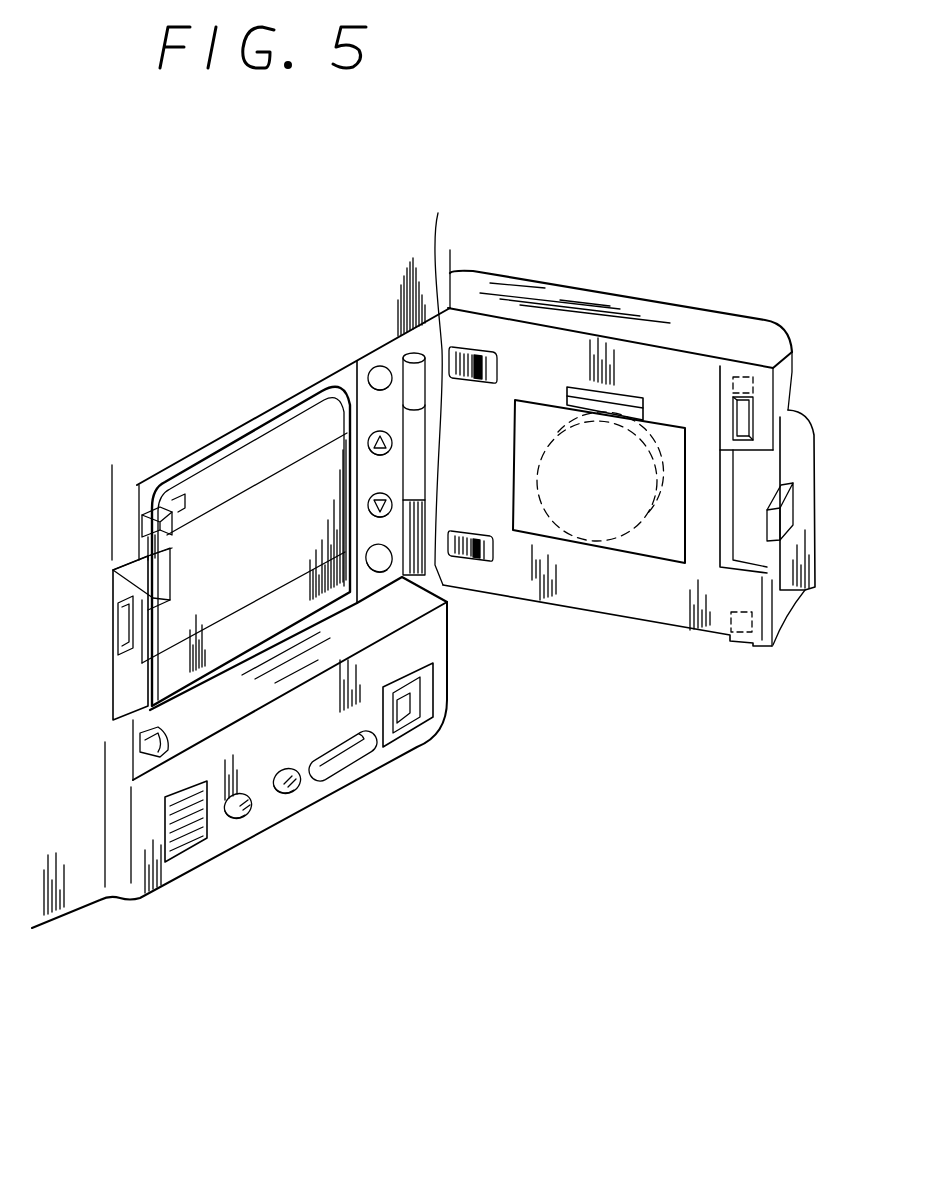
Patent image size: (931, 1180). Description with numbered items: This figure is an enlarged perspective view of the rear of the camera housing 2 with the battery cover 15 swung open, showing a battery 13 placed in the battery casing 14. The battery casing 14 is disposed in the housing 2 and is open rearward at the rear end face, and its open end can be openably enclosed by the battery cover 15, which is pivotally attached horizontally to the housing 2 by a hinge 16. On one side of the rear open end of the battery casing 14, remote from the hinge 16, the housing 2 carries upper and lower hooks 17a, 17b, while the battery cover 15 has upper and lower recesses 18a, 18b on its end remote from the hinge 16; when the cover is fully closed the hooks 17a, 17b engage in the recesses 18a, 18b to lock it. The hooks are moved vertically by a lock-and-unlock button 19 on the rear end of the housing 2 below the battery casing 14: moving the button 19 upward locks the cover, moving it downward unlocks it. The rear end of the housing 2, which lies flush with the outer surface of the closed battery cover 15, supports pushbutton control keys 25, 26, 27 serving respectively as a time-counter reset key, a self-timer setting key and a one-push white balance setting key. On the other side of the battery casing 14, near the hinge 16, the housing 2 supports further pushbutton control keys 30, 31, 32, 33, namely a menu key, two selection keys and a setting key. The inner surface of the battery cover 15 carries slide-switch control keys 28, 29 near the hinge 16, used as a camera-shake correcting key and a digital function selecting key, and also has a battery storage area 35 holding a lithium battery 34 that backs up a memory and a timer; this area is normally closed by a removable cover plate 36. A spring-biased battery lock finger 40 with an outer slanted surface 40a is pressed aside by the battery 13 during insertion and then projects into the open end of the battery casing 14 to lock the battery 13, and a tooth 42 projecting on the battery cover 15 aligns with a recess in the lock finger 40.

The housing 2 is at (66, 920).
The battery 13 is at (247, 520).
The battery casing 14 is at (347, 373).
The battery cover 15 is at (633, 325).
The hinge 16 is at (413, 463).
The upper hook 17a is at (183, 490).
The lower hook 17b is at (135, 762).
The upper recess 18a is at (723, 372).
The lower recess 18b is at (743, 640).
The lock-and-unlock button 19 is at (188, 838).
The control key 25 is at (247, 813).
The control key 26 is at (293, 790).
The control key 27 is at (347, 755).
The control key 28 is at (468, 358).
The control key 29 is at (468, 560).
The control key 30 is at (382, 368).
The control key 31 is at (450, 250).
The control key 32 is at (400, 513).
The control key 33 is at (380, 568).
The lithium battery 34 is at (662, 445).
The battery storage area 35 is at (681, 513).
The cover plate 36 is at (595, 497).
The battery lock finger 40 is at (137, 642).
The slanted surface 40a is at (125, 560).
The tooth 42 is at (770, 527).